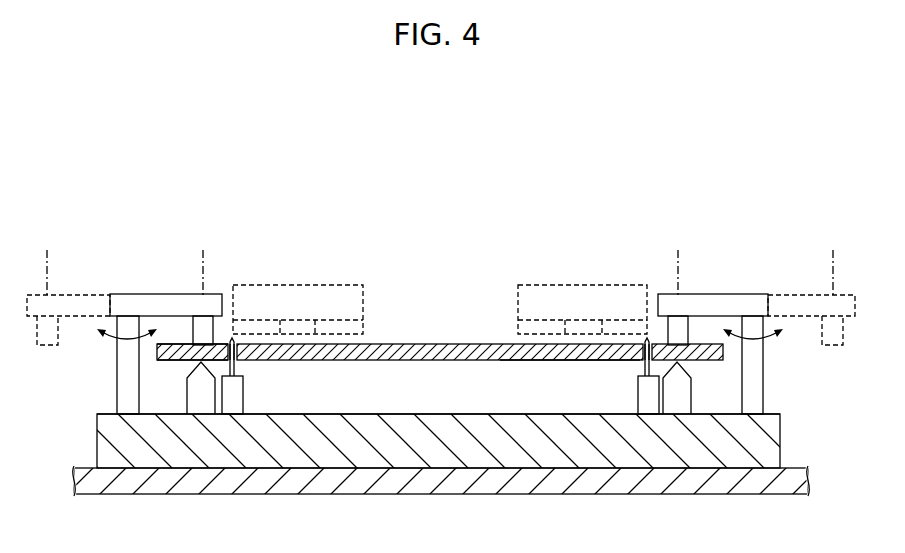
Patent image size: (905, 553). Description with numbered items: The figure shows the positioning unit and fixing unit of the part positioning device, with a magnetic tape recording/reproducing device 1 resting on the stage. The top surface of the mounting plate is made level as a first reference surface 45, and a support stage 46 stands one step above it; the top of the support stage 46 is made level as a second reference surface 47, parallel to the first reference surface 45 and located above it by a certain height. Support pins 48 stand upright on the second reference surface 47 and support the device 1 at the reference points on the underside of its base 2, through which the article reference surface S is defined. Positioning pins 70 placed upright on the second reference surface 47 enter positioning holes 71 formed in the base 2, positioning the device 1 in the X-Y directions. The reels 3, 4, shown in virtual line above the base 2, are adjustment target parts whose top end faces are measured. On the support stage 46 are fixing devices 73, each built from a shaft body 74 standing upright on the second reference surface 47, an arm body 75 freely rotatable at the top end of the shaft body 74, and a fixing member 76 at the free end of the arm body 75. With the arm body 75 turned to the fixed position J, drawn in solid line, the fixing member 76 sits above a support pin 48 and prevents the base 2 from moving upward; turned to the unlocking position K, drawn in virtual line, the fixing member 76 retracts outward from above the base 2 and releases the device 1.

The magnetic tape recording/reproducing device 1 is at (359, 365).
The base 2 is at (305, 353).
The reel 3 is at (363, 285).
The reel 4 is at (518, 285).
The first reference surface 45 is at (767, 483).
The support stage 46 is at (780, 440).
The second reference surface 47 is at (478, 414).
The support pin 48 is at (197, 390).
The positioning pin 70 is at (234, 338).
The positioning hole 71 is at (238, 340).
The fixing device 73 is at (165, 275).
The shaft body 74 is at (117, 372).
The arm body 75 is at (93, 294).
The fixing member 76 is at (213, 333).
The fixed position J is at (439, 261).
The unlocking position K is at (439, 261).
The article reference surface S is at (562, 362).